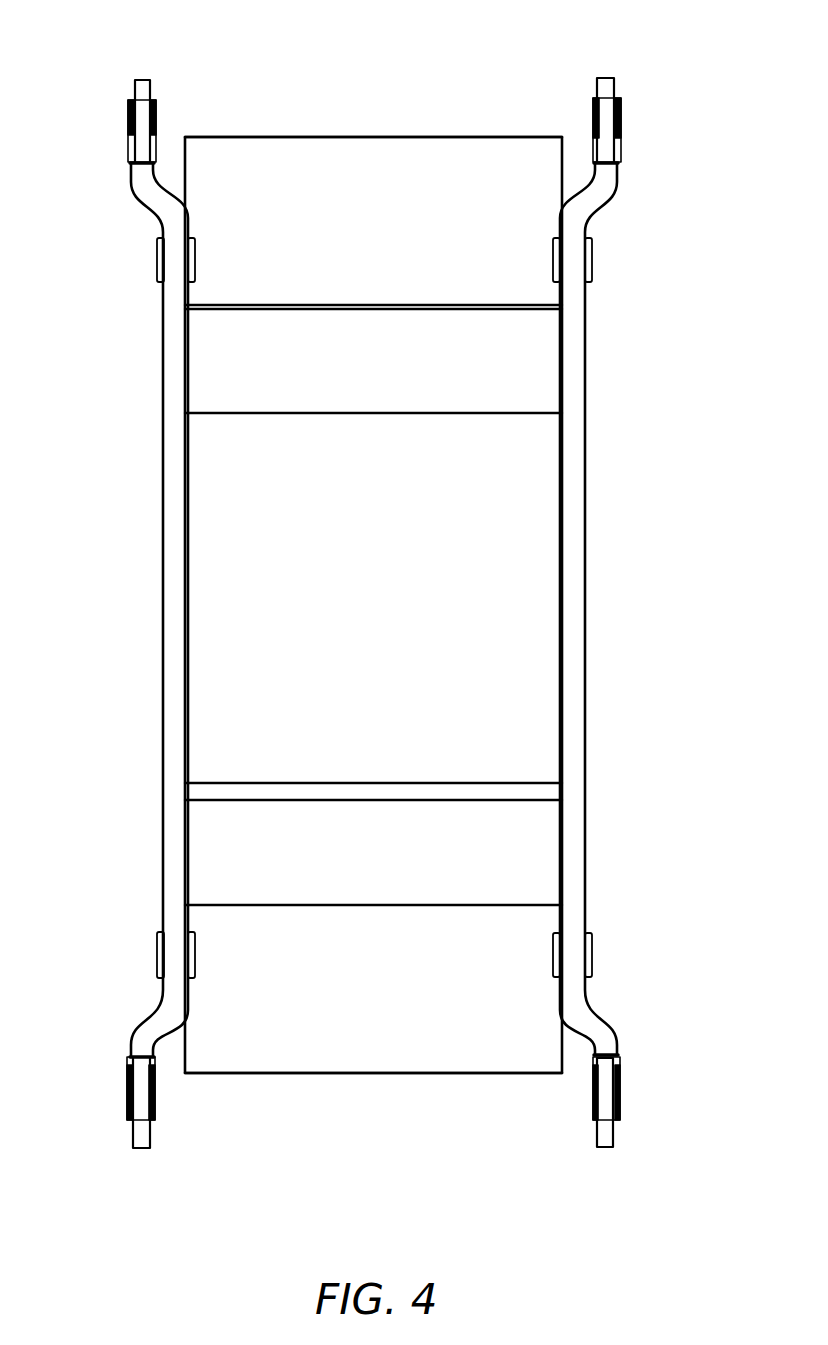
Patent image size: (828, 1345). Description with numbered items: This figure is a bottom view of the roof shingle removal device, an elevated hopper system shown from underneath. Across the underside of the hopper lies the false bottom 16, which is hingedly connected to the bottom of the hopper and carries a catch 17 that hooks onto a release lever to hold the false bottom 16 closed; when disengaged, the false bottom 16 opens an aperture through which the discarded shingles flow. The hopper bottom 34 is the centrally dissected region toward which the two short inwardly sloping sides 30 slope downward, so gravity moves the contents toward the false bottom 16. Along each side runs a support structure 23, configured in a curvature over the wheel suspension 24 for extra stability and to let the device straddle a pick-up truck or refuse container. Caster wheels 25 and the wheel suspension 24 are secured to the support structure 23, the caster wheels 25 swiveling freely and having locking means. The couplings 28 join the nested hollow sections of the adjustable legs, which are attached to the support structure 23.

The false bottom 16 is at (522, 475).
The catch 17 is at (538, 792).
The support structure 23 is at (163, 652).
The wheel suspension 24 is at (155, 118).
The caster wheels 25 is at (135, 80).
The coupling 28 is at (157, 267).
The short inwardly sloping sides 30 is at (403, 155).
The hopper bottom 34 is at (537, 367).